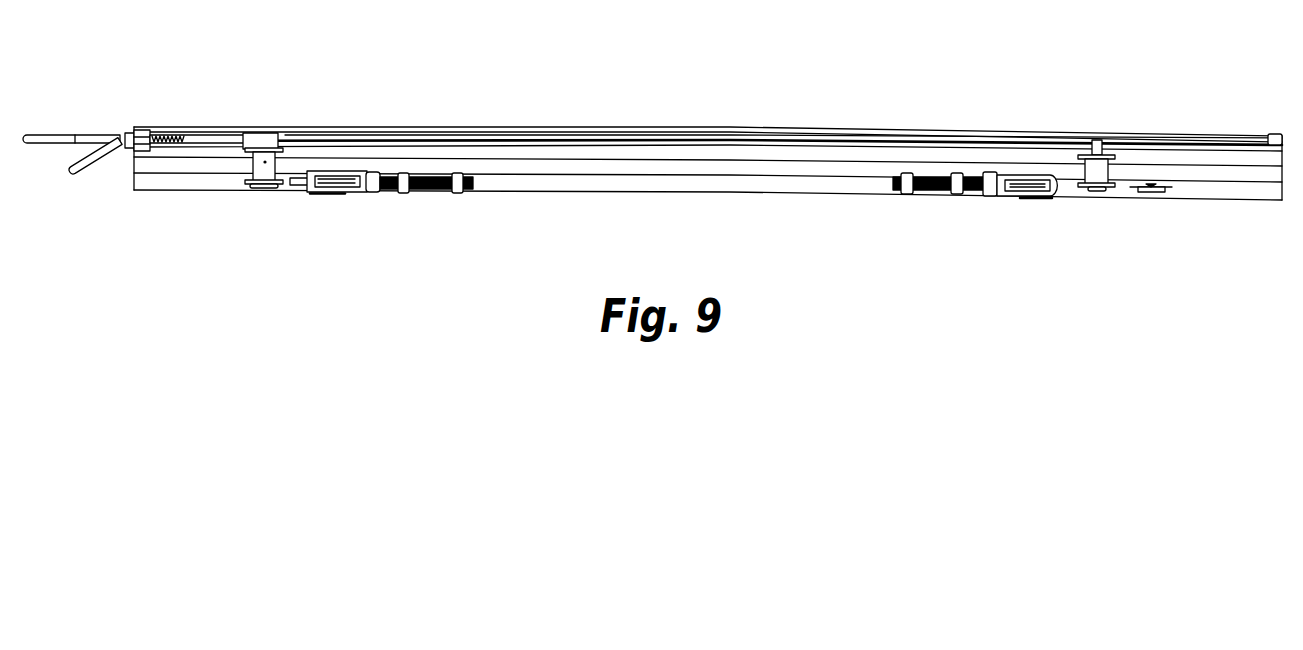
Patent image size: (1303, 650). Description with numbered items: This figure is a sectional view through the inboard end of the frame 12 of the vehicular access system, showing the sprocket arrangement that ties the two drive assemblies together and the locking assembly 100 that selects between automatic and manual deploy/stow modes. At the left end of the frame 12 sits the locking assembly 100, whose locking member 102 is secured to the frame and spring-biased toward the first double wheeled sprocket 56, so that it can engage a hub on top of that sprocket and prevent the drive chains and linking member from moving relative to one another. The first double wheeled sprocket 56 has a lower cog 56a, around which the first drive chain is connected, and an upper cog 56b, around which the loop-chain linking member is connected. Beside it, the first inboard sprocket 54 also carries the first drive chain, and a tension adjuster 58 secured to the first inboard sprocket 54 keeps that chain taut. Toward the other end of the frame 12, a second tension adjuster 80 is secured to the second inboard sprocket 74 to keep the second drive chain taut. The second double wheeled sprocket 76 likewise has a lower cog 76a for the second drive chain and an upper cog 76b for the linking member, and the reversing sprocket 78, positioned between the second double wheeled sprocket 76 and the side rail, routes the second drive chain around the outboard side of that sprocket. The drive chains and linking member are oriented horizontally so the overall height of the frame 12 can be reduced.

The frame 12 is at (666, 124).
The locking assembly 100 is at (96, 118).
The locking member 102 is at (197, 137).
The first double wheeled sprocket 56 is at (250, 165).
The lower cog of first double sprocket 56a is at (243, 188).
The upper cog of first double sprocket 56b is at (240, 136).
The first inboard sprocket 54 is at (310, 194).
The tension adjuster 58 is at (415, 195).
The tension adjuster 80 is at (937, 197).
The second inboard sprocket 74 is at (1060, 198).
The second double wheeled sprocket 76 is at (1110, 172).
The lower cog of second double sprocket 76a is at (1085, 189).
The upper cog of second double sprocket 76b is at (1084, 148).
The reversing sprocket 78 is at (1165, 193).